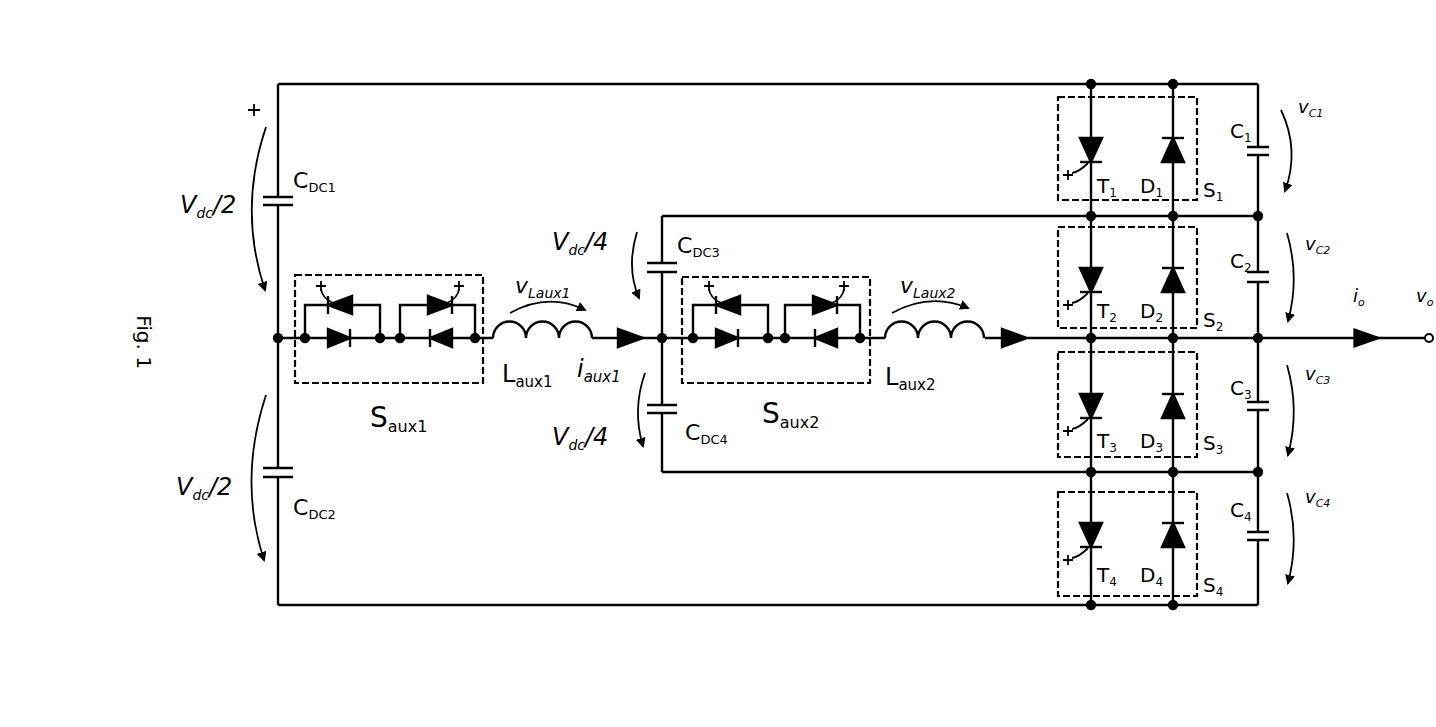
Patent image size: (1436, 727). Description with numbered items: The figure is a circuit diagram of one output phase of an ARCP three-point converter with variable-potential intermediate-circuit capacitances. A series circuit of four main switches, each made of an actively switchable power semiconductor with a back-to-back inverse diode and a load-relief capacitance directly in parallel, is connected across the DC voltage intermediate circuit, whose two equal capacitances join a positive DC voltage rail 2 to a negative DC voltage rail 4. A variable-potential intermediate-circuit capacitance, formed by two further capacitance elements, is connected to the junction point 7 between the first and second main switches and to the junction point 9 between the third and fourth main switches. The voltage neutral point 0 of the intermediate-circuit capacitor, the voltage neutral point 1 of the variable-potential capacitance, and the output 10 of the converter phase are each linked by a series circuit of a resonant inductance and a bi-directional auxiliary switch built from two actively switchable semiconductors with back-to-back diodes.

The voltage neutral point 0 is at (253, 330).
The voltage neutral point 1 is at (657, 331).
The positive DC voltage rail 2 is at (768, 68).
The negative DC voltage rail 4 is at (776, 646).
The junction point 7 is at (1231, 200).
The junction point 9 is at (1231, 456).
The output 10 is at (1382, 377).